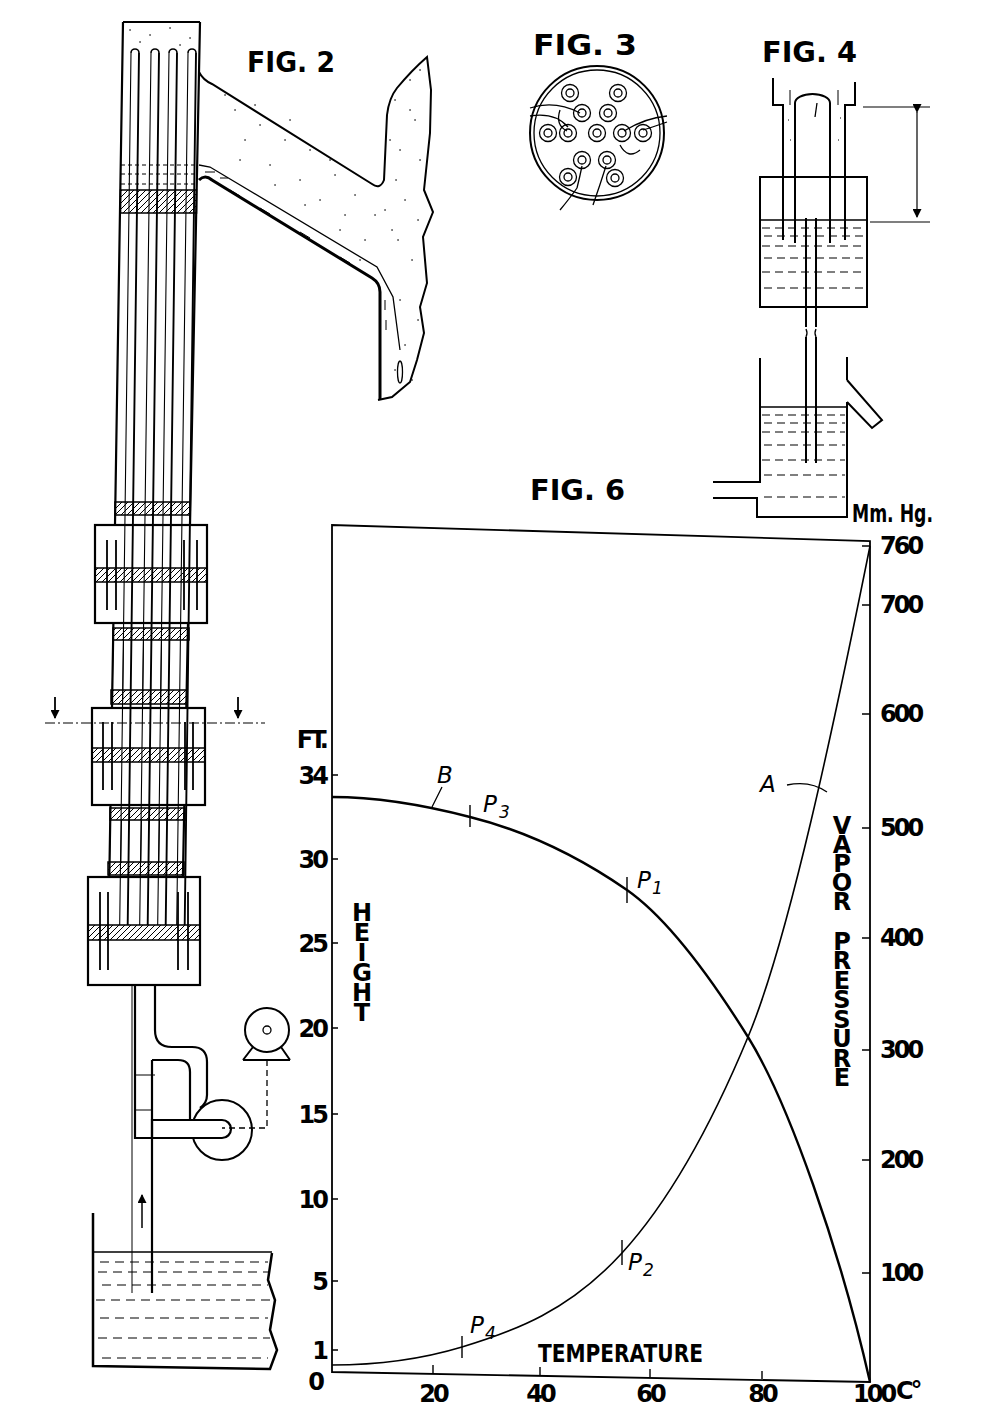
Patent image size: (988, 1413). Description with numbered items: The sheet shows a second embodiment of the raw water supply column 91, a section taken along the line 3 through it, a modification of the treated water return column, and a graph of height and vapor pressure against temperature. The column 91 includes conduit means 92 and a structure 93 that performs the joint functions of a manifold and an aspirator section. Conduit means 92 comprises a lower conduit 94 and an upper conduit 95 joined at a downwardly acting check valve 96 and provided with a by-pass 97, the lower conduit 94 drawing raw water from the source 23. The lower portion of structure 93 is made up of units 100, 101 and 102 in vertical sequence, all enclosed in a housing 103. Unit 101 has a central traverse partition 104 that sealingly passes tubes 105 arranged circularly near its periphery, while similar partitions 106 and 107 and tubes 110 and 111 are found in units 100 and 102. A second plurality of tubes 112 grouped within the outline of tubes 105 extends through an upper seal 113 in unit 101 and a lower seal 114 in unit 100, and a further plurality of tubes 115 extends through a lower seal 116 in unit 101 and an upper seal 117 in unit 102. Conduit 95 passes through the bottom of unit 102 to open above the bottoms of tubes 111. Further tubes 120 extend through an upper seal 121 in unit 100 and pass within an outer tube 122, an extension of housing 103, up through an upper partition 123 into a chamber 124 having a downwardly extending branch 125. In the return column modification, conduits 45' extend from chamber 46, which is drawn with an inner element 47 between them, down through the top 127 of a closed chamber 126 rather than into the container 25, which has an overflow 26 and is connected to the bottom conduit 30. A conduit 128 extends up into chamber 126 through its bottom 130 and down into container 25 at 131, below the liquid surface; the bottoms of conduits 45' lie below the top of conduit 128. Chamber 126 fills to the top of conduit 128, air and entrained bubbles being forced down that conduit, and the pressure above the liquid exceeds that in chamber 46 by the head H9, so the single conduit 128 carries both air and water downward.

In FIG. 2, the source 23 is at (93, 1297).
In FIG. 4, the container 25 is at (848, 484).
In FIG. 4, the overflow 26 is at (870, 403).
In FIG. 4, the conduit 30 is at (737, 481).
In FIG. 4, the conduits 45' is at (814, 126).
In FIG. 4, the chamber 46 is at (857, 85).
In FIG. 4, the inner tube 47 is at (812, 168).
In FIG. 2, the raw water supply column 91 is at (268, 386).
In FIG. 2, the conduit means 92 is at (103, 1118).
In FIG. 2, the structure 93 is at (83, 627).
In FIG. 2, the lower conduit 94 is at (132, 1182).
In FIG. 2, the upper conduit 95 is at (143, 1015).
In FIG. 2, the check valve 96 is at (151, 1092).
In FIG. 2, the by-pass 97 is at (197, 1160).
In FIG. 2, the unit 100 is at (93, 545).
In FIG. 2, the unit 101 is at (90, 750).
In FIG. 2, the unit 102 is at (86, 907).
In FIG. 2, the housing 103 is at (108, 825).
In FIG. 3, the housing 103 is at (655, 93).
In FIG. 2, the central traverse partition 104 is at (205, 752).
In FIG. 3, the central traverse partition 104 is at (577, 188).
In FIG. 2, the tubes 105 is at (103, 780).
In FIG. 3, the tubes 105 is at (577, 87).
In FIG. 2, the partition 106 is at (205, 575).
In FIG. 2, the partition 107 is at (194, 932).
In FIG. 2, the tubes 110 is at (197, 559).
In FIG. 2, the tubes 111 is at (98, 950).
In FIG. 2, the tubes 112 is at (170, 672).
In FIG. 3, the tubes 112 is at (604, 164).
In FIG. 2, the upper seal 113 is at (190, 700).
In FIG. 2, the lower seal 114 is at (190, 634).
In FIG. 2, the tubes 115 is at (168, 848).
In FIG. 2, the lower seal 116 is at (185, 815).
In FIG. 2, the upper seal 117 is at (184, 868).
In FIG. 2, the tubes 120 is at (172, 468).
In FIG. 2, the upper seal 121 is at (190, 509).
In FIG. 2, the outer tube 122 is at (117, 367).
In FIG. 2, the upper partition 123 is at (127, 203).
In FIG. 2, the chamber 124 is at (195, 127).
In FIG. 2, the branch 125 is at (298, 168).
In FIG. 4, the closed chamber 126 is at (758, 257).
In FIG. 4, the top 127 is at (770, 175).
In FIG. 4, the conduit 128 is at (818, 322).
In FIG. 4, the bottom 130 is at (773, 308).
In FIG. 4, the termination of conduit 128 131 is at (818, 453).
In FIG. 2, the section line 3 is at (155, 696).
In FIG. 4, the difference in head H9 is at (898, 164).